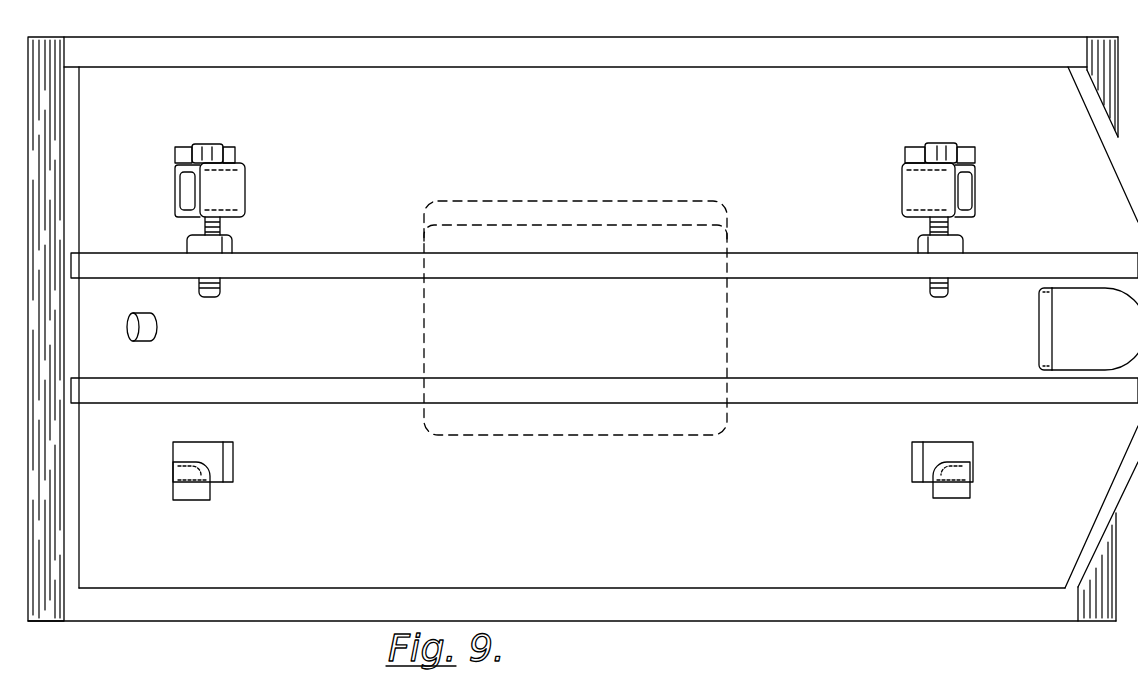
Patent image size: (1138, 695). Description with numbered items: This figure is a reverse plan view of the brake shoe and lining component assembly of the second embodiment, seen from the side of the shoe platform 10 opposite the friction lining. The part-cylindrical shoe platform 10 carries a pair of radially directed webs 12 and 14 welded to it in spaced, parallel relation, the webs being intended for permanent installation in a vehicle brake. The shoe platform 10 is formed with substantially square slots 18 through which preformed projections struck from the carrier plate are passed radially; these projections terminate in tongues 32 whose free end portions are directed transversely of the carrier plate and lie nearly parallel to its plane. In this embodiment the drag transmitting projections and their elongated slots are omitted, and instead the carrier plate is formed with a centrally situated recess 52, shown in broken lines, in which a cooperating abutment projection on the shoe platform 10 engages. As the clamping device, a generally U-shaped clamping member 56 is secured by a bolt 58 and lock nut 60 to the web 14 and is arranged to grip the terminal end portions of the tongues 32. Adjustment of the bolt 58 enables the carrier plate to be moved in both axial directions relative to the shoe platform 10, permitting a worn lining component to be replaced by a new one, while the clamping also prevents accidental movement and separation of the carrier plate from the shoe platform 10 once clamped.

The shoe platform 10 is at (583, 329).
The web 12 is at (100, 392).
The web 14 is at (116, 264).
The slot 18 is at (213, 452).
The tongue 32 is at (199, 488).
The recess 52 is at (584, 436).
The clamping member 56 is at (910, 190).
The bolt 58 is at (933, 153).
The lock nut 60 is at (920, 247).